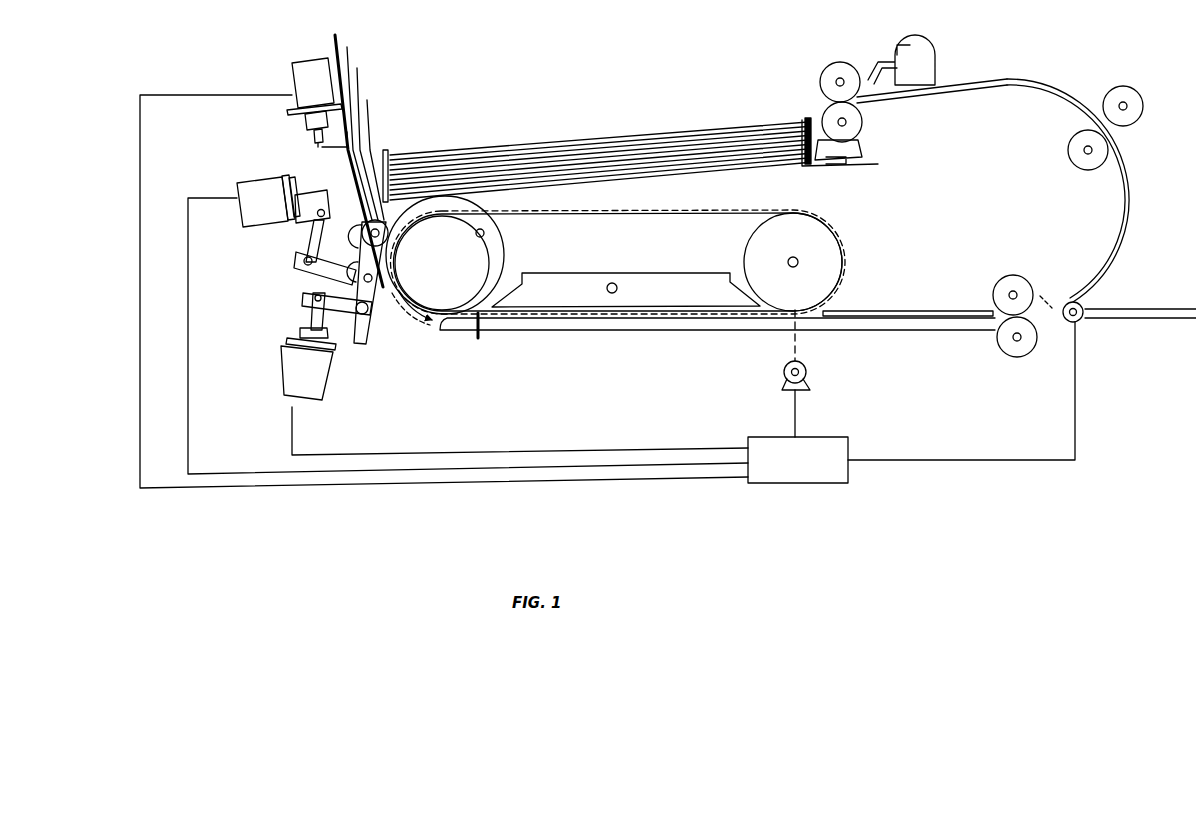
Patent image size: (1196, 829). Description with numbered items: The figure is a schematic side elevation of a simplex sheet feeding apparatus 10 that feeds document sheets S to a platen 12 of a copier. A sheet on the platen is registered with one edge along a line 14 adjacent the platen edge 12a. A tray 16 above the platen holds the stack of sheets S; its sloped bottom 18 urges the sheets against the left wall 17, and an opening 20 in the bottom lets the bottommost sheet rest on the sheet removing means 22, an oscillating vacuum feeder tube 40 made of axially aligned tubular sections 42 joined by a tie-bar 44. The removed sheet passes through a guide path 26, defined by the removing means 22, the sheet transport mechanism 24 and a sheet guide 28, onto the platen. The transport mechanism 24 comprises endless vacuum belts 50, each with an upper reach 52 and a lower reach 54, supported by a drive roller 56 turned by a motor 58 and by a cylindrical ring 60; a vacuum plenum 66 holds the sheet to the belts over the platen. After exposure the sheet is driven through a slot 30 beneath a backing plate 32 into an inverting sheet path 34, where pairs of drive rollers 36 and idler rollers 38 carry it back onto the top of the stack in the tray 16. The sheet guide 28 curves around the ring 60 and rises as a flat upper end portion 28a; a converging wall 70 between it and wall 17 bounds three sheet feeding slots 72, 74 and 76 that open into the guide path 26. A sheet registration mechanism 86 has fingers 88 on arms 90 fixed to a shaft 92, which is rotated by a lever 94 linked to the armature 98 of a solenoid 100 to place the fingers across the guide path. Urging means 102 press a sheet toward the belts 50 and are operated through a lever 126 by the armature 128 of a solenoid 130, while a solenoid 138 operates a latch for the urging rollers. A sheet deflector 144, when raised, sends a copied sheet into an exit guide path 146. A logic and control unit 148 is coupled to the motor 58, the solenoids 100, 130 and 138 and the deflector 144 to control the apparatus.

The sheet feeding apparatus 10 is at (200, 62).
The platen 12 is at (684, 326).
The edge of the platen 12a is at (445, 327).
The registration line 14 is at (480, 330).
The tray 16 is at (697, 174).
The left wall of the tray 17 is at (392, 150).
The tray bottom 18 is at (662, 180).
The opening in the tray bottom 20 is at (432, 196).
The sheet removing means 22 is at (460, 211).
The sheet transport mechanism 24 is at (572, 212).
The guide path 26 is at (396, 212).
The sheet guide 28 is at (412, 322).
The upper end portion of the sheet guide 28a is at (334, 37).
The slot 30 is at (890, 320).
The backing plate 32 is at (884, 310).
The inverting sheet path 34 is at (1106, 256).
The drive rollers 36 is at (864, 122).
The idler rollers 38 is at (822, 70).
The oscillating vacuum feeder tube 40 is at (508, 244).
The tubular sections 42 is at (510, 262).
The tie-bar 44 is at (516, 296).
The vacuum belts 50 is at (757, 212).
The upper reach 52 is at (672, 214).
The lower reach 54 is at (705, 305).
The drive roller 56 is at (747, 240).
The motor 58 is at (808, 378).
The cylindrical ring 60 is at (476, 236).
The vacuum plenum 66 is at (573, 282).
The wall 70 is at (376, 120).
The slot 72 is at (345, 52).
The slot 74 is at (358, 68).
The slot 76 is at (370, 78).
The sheet registration mechanism 86 is at (292, 272).
The fingers 88 is at (382, 340).
The arms 90 is at (304, 300).
The shaft 92 is at (296, 259).
The lever 94 is at (314, 236).
The armature 98 is at (314, 203).
The solenoid 100 is at (245, 186).
The urging means 102 is at (282, 343).
The lever 126 is at (300, 300).
The armature 128 is at (312, 326).
The solenoid 130 is at (285, 376).
The solenoid 138 is at (284, 80).
The sheet deflector 144 is at (1060, 330).
The guide path 146 is at (1172, 322).
The logic and control unit 148 is at (824, 488).
The document sheets S is at (676, 132).